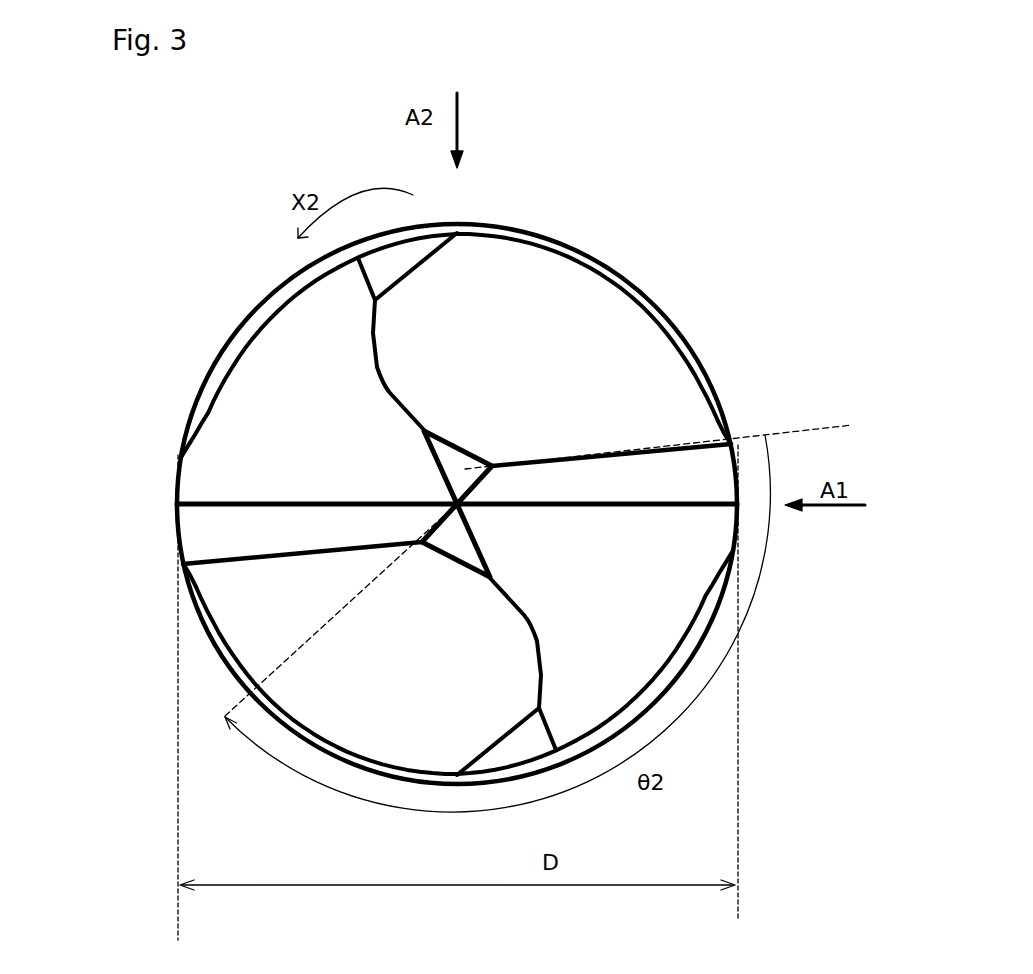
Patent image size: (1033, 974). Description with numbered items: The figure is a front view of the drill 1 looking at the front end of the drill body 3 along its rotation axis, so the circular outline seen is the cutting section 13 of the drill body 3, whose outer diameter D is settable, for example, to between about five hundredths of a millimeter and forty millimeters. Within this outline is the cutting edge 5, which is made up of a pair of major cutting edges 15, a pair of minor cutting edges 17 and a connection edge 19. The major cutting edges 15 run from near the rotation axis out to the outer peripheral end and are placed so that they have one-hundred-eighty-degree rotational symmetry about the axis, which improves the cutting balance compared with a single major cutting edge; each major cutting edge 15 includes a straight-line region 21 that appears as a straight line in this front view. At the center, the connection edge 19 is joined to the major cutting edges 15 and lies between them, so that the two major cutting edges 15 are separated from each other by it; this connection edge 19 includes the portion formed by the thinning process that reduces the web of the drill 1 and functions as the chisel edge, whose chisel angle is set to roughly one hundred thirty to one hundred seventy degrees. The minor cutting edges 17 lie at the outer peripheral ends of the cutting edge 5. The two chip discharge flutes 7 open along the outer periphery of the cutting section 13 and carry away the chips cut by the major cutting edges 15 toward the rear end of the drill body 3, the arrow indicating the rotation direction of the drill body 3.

The drill 1 is at (642, 195).
The drill body 3 is at (457, 488).
The cutting section 13 is at (283, 283).
The cutting edge 5 is at (421, 477).
The minor cutting edges 17 is at (731, 444).
The connection edge 19 is at (500, 477).
The chip discharge flute 7 is at (632, 347).
The major cutting edges 15 is at (720, 400).
The straight-line region 21 is at (663, 439).